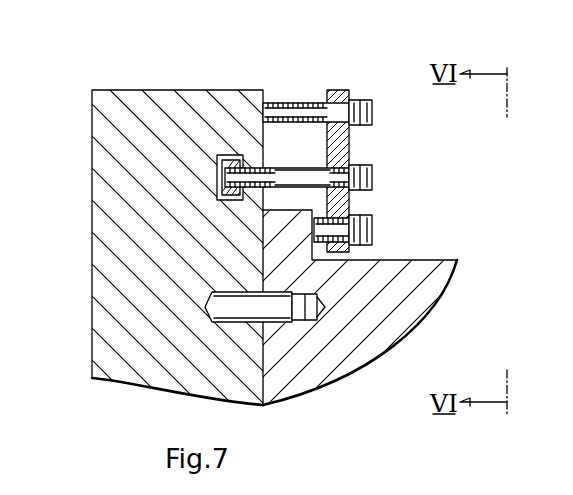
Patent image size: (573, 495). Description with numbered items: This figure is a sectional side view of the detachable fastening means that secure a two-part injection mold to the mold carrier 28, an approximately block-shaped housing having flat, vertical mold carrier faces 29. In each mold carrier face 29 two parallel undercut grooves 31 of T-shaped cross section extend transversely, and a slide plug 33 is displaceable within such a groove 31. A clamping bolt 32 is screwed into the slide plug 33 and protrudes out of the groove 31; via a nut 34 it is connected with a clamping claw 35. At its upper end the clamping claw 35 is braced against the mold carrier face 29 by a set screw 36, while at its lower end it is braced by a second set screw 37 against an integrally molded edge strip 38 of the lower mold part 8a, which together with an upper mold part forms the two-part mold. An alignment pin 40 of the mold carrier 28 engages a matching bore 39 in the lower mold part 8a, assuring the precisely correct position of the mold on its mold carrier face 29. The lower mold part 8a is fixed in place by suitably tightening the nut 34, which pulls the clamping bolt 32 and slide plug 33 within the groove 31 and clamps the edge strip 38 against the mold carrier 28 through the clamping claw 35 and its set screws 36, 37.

The mold carrier 28 is at (161, 360).
The lower mold part 8a is at (334, 375).
The alignment pin 40 is at (240, 312).
The bore 39 is at (306, 318).
The clamping claw 35 is at (339, 92).
The set screw 36 is at (296, 103).
The undercut groove 31 is at (217, 178).
The mold carrier face 29 is at (318, 178).
The nut 34 is at (357, 188).
The clamping bolt 32 is at (333, 162).
The second set screw 37 is at (366, 238).
The edge strip 38 is at (349, 213).
The slide plug 33 is at (233, 158).